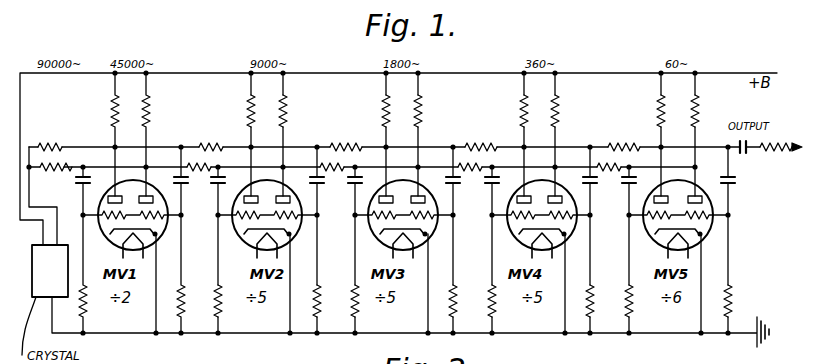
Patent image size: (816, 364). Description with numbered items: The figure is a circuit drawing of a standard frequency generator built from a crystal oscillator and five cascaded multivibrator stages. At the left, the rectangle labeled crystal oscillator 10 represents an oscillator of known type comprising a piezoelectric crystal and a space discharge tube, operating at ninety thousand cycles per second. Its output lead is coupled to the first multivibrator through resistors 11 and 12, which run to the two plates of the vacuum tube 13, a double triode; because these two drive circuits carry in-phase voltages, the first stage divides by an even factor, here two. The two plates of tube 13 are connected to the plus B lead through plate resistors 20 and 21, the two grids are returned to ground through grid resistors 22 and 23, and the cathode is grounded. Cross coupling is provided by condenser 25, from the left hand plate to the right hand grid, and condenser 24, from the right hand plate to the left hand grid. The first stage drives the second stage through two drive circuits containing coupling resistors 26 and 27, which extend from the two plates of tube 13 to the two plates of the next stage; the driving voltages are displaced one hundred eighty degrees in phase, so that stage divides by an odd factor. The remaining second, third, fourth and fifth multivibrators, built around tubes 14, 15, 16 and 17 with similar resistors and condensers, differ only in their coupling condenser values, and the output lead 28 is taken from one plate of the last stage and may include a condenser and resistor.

The crystal oscillator 10 is at (50, 271).
The coupling resistor 11 is at (60, 143).
The coupling resistor 12 is at (60, 166).
The vacuum tube 13 is at (98, 228).
The vacuum tube 14 is at (238, 234).
The vacuum tube 15 is at (369, 235).
The vacuum tube 16 is at (509, 232).
The vacuum tube 17 is at (650, 232).
The plate resistor 20 is at (112, 111).
The plate resistor 21 is at (150, 113).
The grid resistor 22 is at (82, 299).
The grid resistor 23 is at (183, 297).
The coupling condenser 24 is at (80, 185).
The coupling condenser 25 is at (184, 188).
The coupling resistor 26 is at (204, 146).
The coupling resistor 27 is at (201, 165).
The output lead 28 is at (793, 152).